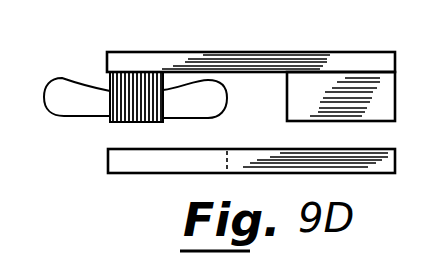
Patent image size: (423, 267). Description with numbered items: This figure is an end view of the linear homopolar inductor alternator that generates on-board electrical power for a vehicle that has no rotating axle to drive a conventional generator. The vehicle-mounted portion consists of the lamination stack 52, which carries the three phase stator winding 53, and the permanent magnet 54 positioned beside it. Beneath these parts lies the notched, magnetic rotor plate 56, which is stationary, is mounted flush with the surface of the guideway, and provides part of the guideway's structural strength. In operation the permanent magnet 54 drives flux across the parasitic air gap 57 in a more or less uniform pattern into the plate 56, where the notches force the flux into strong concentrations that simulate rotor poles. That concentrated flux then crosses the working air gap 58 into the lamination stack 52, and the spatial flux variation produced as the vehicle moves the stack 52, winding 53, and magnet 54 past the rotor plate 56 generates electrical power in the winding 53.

The lamination stack 52 is at (143, 78).
The stator winding 53 is at (70, 90).
The permanent magnet 54 is at (292, 102).
The rotor plate 56 is at (353, 163).
The parasitic air gap 57 is at (385, 135).
The working air gap 58 is at (118, 137).